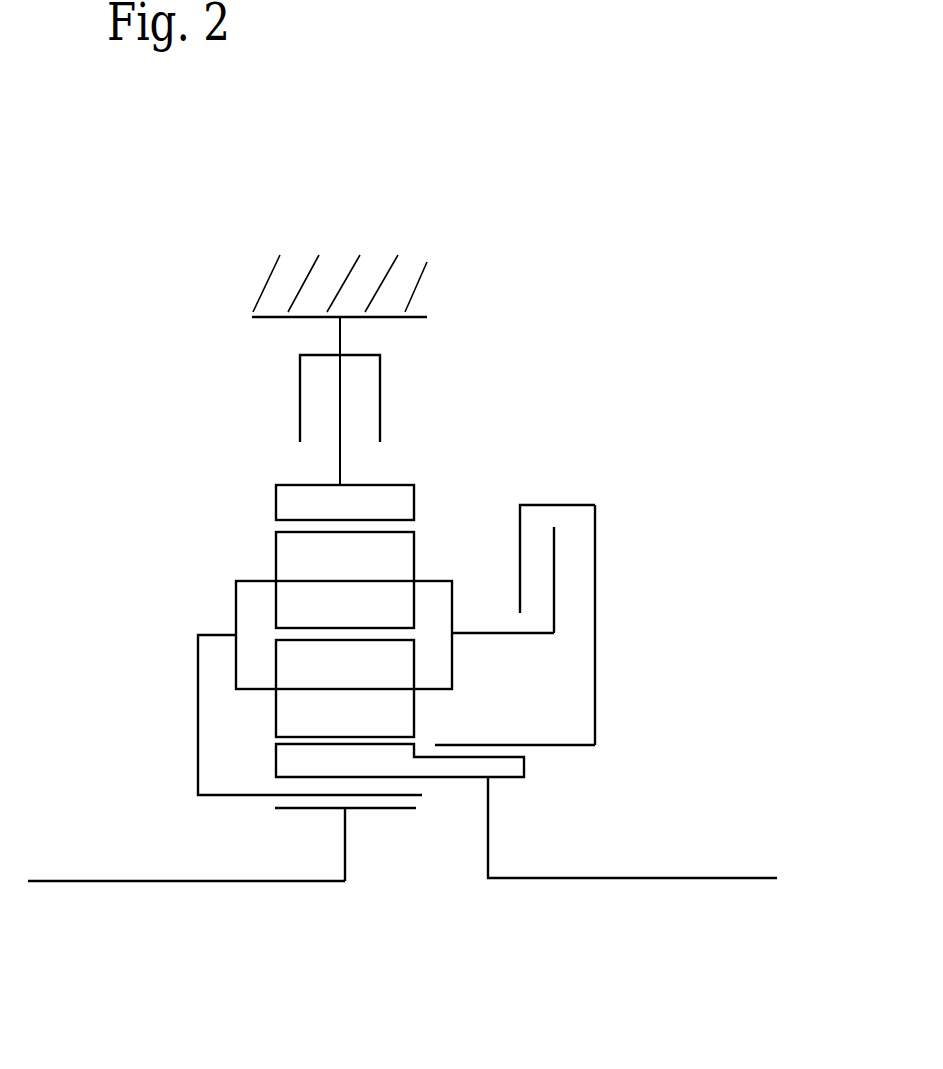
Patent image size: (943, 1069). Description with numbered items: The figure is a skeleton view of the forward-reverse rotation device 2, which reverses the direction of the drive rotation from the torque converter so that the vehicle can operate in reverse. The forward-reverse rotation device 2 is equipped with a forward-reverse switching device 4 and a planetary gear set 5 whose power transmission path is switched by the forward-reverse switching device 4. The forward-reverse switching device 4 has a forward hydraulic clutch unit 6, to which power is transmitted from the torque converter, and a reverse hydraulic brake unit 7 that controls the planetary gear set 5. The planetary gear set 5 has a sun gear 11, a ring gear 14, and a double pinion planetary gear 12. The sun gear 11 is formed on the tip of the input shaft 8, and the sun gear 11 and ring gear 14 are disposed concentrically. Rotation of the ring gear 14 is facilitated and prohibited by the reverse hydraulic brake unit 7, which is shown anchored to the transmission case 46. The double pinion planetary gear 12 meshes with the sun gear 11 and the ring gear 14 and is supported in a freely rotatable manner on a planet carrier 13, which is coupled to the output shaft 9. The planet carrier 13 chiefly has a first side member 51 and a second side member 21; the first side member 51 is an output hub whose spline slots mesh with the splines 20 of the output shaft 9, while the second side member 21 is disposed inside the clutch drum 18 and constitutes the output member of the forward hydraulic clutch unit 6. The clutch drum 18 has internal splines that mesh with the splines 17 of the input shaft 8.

The forward-reverse rotation device 2 is at (560, 257).
The transmission case 46 is at (338, 282).
The reverse hydraulic brake unit 7 is at (388, 383).
The ring gear 14 is at (401, 505).
The double pinion planetary gear 12 is at (300, 665).
The planet carrier 13 is at (233, 601).
The planetary gear set 5 is at (181, 508).
The first side member 51 is at (198, 688).
The sun gear 11 is at (283, 750).
The splines 20 is at (374, 825).
The forward-reverse switching device 4 is at (575, 409).
The forward hydraulic clutch unit 6 is at (602, 529).
The clutch drum 18 is at (595, 632).
The splines 17 is at (491, 742).
The second side member 21 is at (488, 633).
The output shaft 9 is at (127, 881).
The input shaft 8 is at (668, 878).